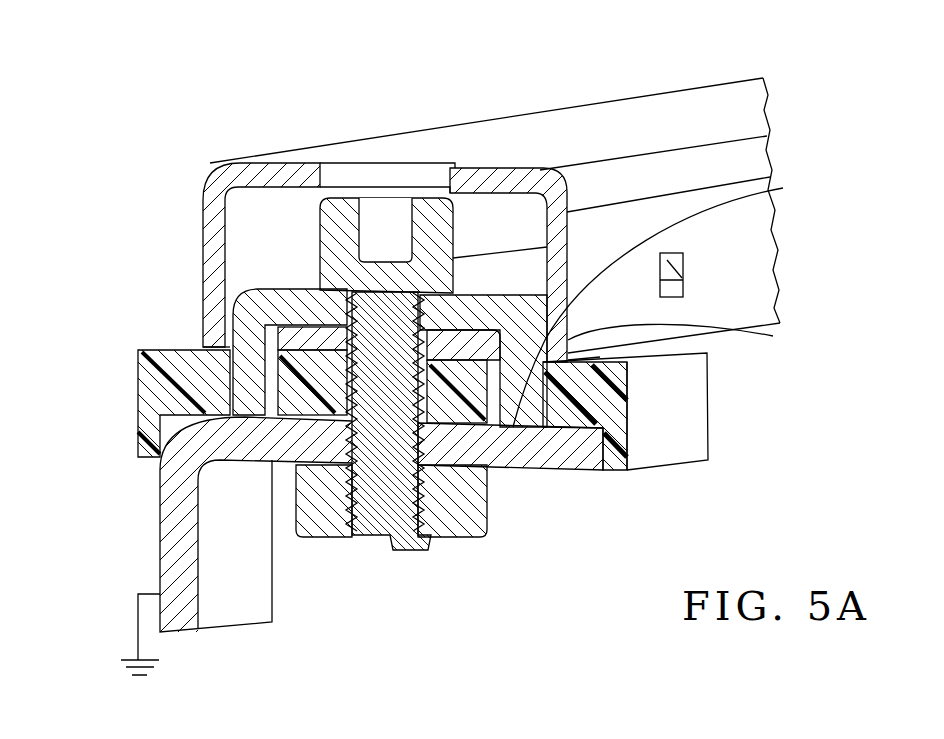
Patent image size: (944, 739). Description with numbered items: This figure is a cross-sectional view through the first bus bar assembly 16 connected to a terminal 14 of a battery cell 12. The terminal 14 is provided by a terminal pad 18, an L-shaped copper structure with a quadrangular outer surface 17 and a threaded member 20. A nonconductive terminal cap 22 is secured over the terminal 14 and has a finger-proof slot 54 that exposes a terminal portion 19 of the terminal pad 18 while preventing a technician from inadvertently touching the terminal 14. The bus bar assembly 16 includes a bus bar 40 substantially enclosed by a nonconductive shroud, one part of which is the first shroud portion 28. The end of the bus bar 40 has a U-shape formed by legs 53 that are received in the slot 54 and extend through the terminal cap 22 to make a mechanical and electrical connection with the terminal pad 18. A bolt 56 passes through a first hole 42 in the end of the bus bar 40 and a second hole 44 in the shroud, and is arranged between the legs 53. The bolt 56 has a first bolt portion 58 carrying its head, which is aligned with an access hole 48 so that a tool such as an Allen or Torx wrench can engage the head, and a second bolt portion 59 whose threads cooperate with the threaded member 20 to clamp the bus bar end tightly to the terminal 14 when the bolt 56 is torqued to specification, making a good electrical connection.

The battery cell 12 is at (150, 667).
The terminal 14 is at (86, 593).
The bus bar assembly 16 is at (565, 104).
The quadrangular outer surface 17 is at (600, 416).
The terminal pad 18 is at (563, 472).
The terminal portion 19 is at (568, 360).
The threaded member 20 is at (492, 512).
The terminal cap 22 is at (150, 402).
The first shroud portion 28 is at (733, 730).
The bus bar 40 is at (392, 445).
The first hole 42 is at (407, 293).
The second hole 44 is at (343, 312).
The access hole 48 is at (418, 170).
The legs 53 is at (783, 188).
The finger-proof slot 54 is at (257, 405).
The bolt 56 is at (347, 288).
The first bolt portion 58 is at (375, 220).
The second bolt portion 59 is at (340, 470).